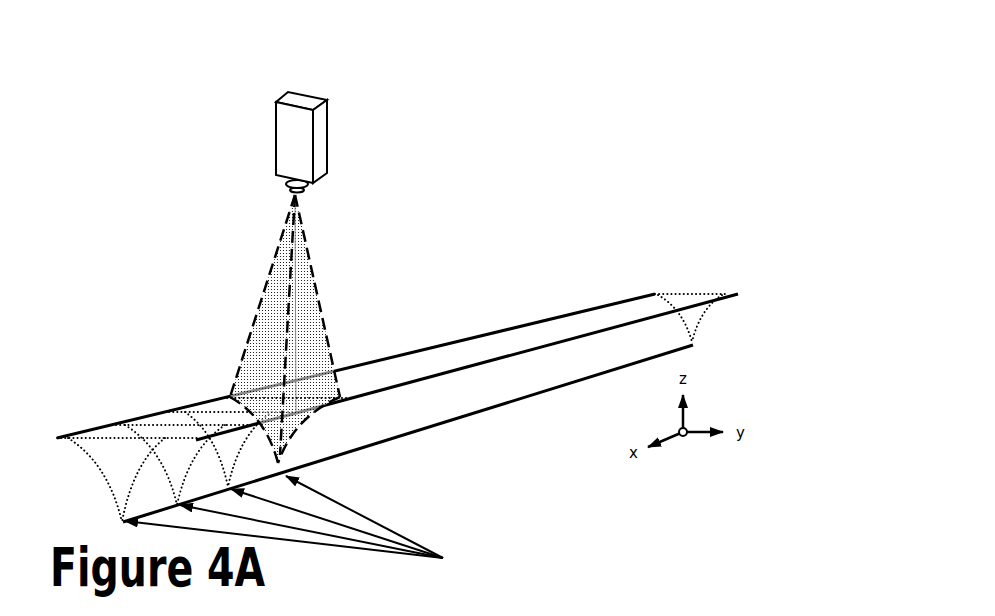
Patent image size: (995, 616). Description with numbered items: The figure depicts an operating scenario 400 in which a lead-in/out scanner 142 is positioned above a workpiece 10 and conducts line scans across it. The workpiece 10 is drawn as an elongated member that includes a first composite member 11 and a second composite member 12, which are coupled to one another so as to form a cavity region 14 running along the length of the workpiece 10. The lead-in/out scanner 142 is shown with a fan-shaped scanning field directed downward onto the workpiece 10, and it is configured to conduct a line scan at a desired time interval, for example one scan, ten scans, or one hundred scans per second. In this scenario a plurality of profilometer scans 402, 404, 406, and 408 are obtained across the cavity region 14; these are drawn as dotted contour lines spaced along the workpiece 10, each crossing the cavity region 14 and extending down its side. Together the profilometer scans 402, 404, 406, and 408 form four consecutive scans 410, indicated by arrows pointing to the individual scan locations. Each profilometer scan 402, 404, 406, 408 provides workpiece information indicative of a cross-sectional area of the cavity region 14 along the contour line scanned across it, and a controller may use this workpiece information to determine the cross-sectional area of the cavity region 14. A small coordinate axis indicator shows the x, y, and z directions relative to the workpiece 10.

The operating scenario 400 is at (795, 98).
The lead-in/out scanner 142 is at (290, 92).
The workpiece 10 is at (423, 368).
The first composite member 11 is at (562, 314).
The second composite member 12 is at (722, 296).
The cavity region 14 is at (399, 371).
The profilometer scan 402 is at (107, 436).
The profilometer scan 404 is at (165, 424).
The profilometer scan 406 is at (218, 410).
The profilometer scan 408 is at (257, 397).
The four consecutive scans 410 is at (443, 558).